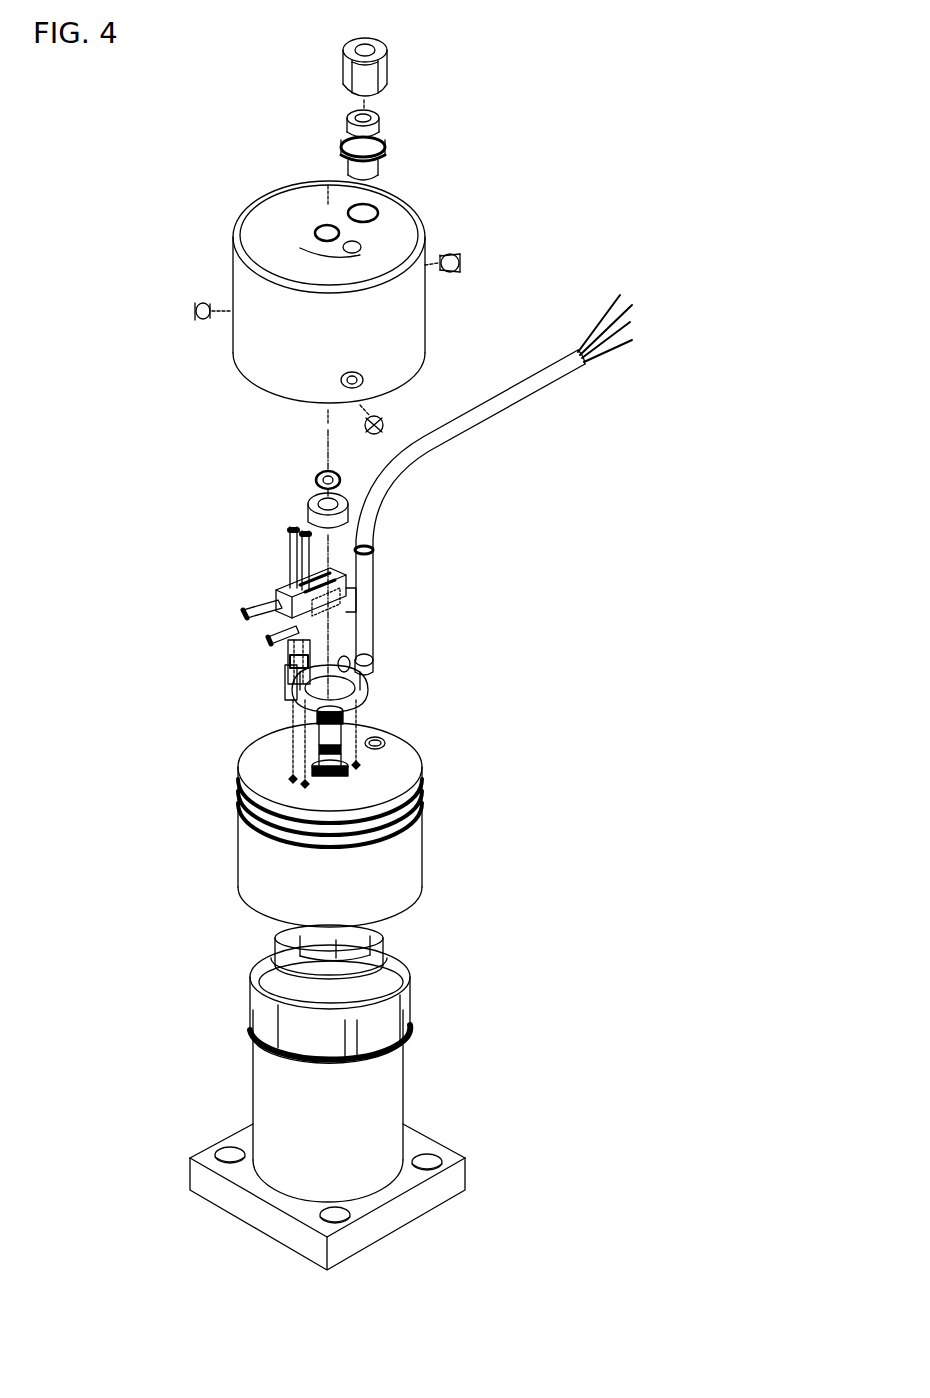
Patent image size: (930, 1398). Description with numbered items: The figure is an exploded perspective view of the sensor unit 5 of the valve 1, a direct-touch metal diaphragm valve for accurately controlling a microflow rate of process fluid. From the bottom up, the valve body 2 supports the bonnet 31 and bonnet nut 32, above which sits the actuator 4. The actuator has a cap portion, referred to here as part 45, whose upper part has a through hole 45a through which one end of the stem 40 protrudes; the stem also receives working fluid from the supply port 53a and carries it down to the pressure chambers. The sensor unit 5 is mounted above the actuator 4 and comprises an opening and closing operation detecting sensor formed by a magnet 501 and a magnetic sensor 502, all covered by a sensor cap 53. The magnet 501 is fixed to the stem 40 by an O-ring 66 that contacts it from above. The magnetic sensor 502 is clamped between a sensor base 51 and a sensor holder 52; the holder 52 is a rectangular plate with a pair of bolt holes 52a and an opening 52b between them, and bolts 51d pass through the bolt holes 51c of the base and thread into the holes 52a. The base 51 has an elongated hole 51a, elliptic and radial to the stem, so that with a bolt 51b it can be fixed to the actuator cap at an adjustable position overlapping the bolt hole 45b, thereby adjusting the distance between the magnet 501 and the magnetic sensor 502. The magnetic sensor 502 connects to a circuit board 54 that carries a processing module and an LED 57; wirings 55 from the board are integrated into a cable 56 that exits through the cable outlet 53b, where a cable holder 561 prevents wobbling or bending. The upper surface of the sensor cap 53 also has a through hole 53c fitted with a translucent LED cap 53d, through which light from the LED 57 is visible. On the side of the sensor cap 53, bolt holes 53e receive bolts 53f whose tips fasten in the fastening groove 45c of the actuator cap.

The valve 1 is at (100, 146).
The cable holder 561 is at (382, 124).
The sensor cap 53 is at (425, 228).
The supply port 53a is at (322, 224).
The cable outlet 53b is at (378, 214).
The through hole 53c is at (354, 250).
The LED cap 53d is at (362, 249).
The bolt hole 53e is at (348, 390).
The bolt 53f is at (465, 262).
The wirings 55 is at (612, 340).
The cable 56 is at (575, 364).
The opening 52b is at (372, 552).
The LED 57 is at (368, 663).
The sensor unit 5 is at (228, 515).
The O-ring 66 is at (342, 478).
The magnet 501 is at (350, 508).
The sensor base 51 is at (280, 598).
The bolt 51b is at (288, 525).
The elongated hole 51a is at (292, 584).
The bolt 51d is at (270, 630).
The bolt hole 51c is at (307, 617).
The sensor holder 52 is at (372, 592).
The bolt hole 52a is at (345, 615).
The circuit board 54 is at (370, 690).
The magnetic sensor 502 is at (290, 692).
The actuator 4 is at (432, 865).
The stem 40 is at (345, 746).
The housing 45 is at (238, 867).
The through hole 45a is at (425, 803).
The bolt hole 45b is at (290, 792).
The fastening groove 45c is at (238, 822).
The bonnet nut 32 is at (385, 940).
The bonnet 31 is at (410, 1002).
The valve body 2 is at (468, 1172).